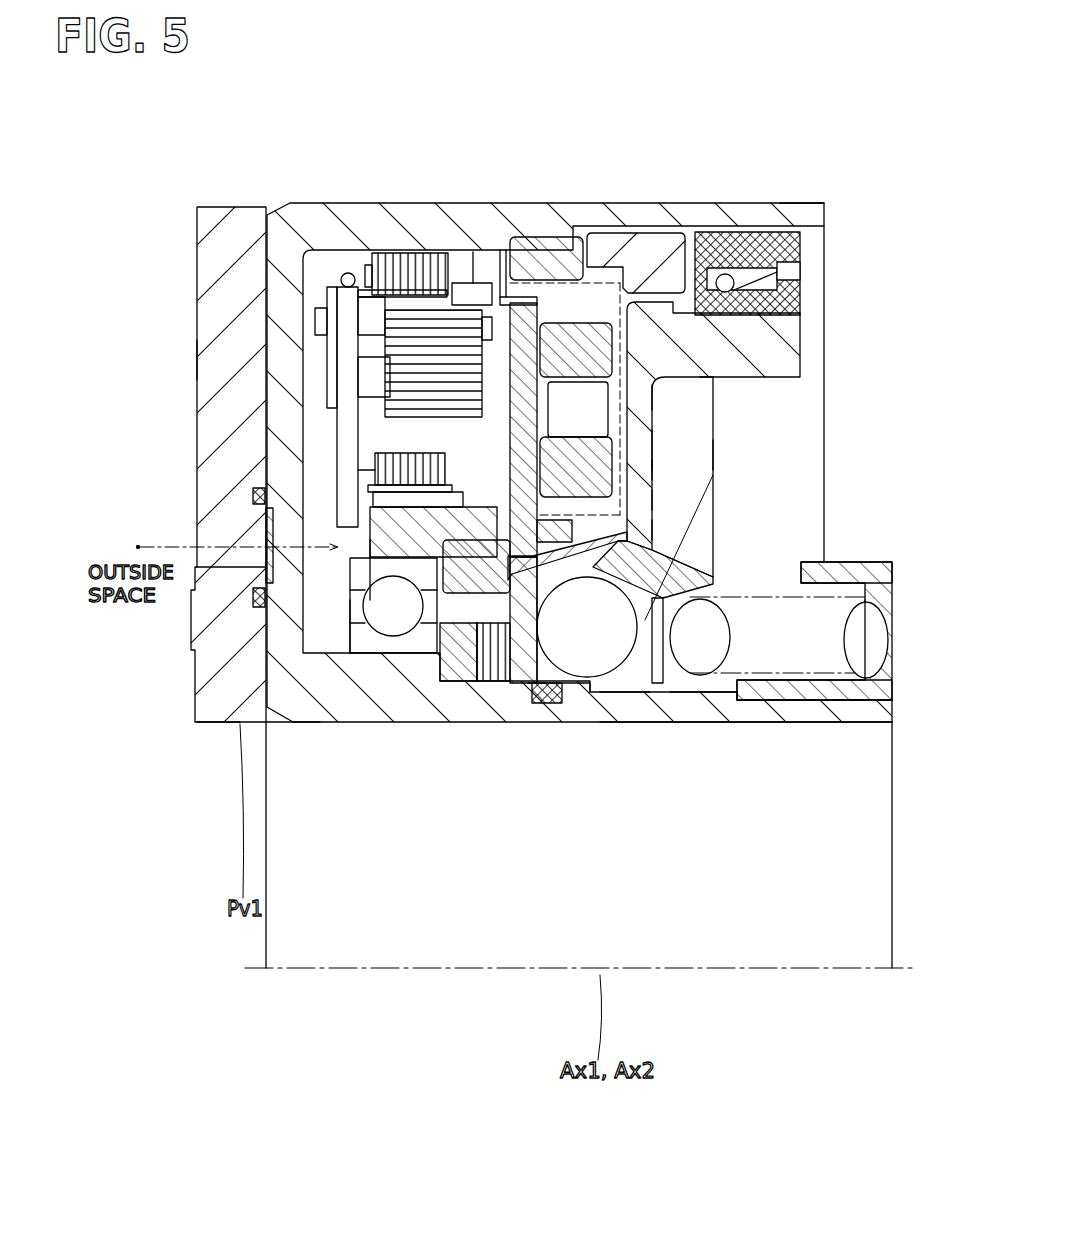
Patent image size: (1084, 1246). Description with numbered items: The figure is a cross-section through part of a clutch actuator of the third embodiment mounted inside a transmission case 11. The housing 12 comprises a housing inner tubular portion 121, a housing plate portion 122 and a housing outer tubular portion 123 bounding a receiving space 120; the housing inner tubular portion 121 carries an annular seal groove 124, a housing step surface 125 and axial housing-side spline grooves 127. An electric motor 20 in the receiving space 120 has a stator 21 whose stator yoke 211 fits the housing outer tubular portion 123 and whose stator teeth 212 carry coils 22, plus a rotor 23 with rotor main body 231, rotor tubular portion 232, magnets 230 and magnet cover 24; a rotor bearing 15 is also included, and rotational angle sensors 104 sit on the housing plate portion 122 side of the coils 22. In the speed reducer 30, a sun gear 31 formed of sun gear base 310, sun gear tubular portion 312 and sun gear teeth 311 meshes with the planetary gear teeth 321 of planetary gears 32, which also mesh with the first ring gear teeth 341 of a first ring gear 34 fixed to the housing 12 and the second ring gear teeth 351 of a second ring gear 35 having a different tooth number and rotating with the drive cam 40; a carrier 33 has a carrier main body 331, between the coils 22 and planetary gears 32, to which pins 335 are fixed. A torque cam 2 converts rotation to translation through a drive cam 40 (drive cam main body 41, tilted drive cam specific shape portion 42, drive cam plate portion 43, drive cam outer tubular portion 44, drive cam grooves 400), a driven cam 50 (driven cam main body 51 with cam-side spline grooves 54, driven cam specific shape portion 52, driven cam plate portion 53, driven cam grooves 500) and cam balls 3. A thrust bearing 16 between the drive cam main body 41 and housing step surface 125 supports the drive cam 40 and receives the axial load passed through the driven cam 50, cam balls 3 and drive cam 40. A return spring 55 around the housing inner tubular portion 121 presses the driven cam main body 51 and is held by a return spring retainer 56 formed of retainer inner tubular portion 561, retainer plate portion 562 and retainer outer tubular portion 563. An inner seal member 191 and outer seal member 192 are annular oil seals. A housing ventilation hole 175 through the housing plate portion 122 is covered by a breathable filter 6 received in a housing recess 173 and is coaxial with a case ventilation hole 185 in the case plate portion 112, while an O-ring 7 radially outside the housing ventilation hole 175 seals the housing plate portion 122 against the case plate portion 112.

The torque cam 2 is at (600, 690).
The cam balls 3 is at (590, 680).
The breathable filter 6 is at (340, 545).
The O-ring 7 is at (256, 497).
The transmission case 11 is at (215, 248).
The housing 12 is at (318, 222).
The rotor bearing 15 is at (352, 650).
The thrust bearing 16 is at (470, 650).
The electric motor 20 is at (428, 300).
The stator 21 is at (330, 295).
The coils 22 is at (336, 398).
The rotor 23 is at (400, 612).
The magnet cover 24 is at (370, 470).
The speed reducer 30 is at (598, 250).
The sun gear 31 is at (490, 560).
The planetary gears 32 is at (740, 366).
The carrier 33 is at (545, 330).
The first ring gear 34 is at (540, 258).
The second ring gear 35 is at (645, 250).
The drive cam 40 is at (720, 455).
The drive cam main body 41 is at (530, 690).
The drive cam specific shape portion 42 is at (630, 545).
The drive cam plate portion 43 is at (690, 430).
The drive cam outer tubular portion 44 is at (735, 354).
The driven cam 50 is at (740, 412).
The driven cam main body 51 is at (640, 640).
The driven cam specific shape portion 52 is at (668, 585).
The driven cam plate portion 53 is at (692, 455).
The cam-side spline grooves 54 is at (618, 672).
The return spring 55 is at (868, 617).
The return spring retainer 56 is at (880, 675).
The rotational angle sensors 104 is at (357, 378).
The case plate portion 112 is at (200, 356).
The receiving space 120 is at (357, 410).
The housing inner tubular portion 121 is at (860, 712).
The housing plate portion 122 is at (285, 318).
The housing outer tubular portion 123 is at (800, 215).
The seal groove 124 is at (562, 685).
The housing step surface 125 is at (455, 660).
The housing-side spline grooves 127 is at (692, 698).
The housing recess 173 is at (264, 520).
The housing ventilation hole 175 is at (292, 724).
The case ventilation hole 185 is at (218, 724).
The inner seal member 191 is at (548, 703).
The outer seal member 192 is at (742, 235).
The stator yoke 211 is at (346, 274).
The stator teeth 212 is at (340, 442).
The magnets 230 is at (400, 488).
The rotor main body 231 is at (385, 640).
The rotor tubular portion 232 is at (425, 600).
The sun gear base 310 is at (500, 650).
The sun gear teeth 311 is at (660, 468).
The sun gear tubular portion 312 is at (652, 530).
The planetary gear teeth 321 is at (655, 500).
The carrier main body 331 is at (500, 325).
The pins 335 is at (680, 396).
The first ring gear teeth 341 is at (752, 344).
The second ring gear teeth 351 is at (735, 322).
The drive cam grooves 400 is at (722, 660).
The driven cam grooves 500 is at (635, 605).
The retainer inner tubular portion 561 is at (850, 696).
The retainer plate portion 562 is at (880, 652).
The retainer outer tubular portion 563 is at (868, 576).